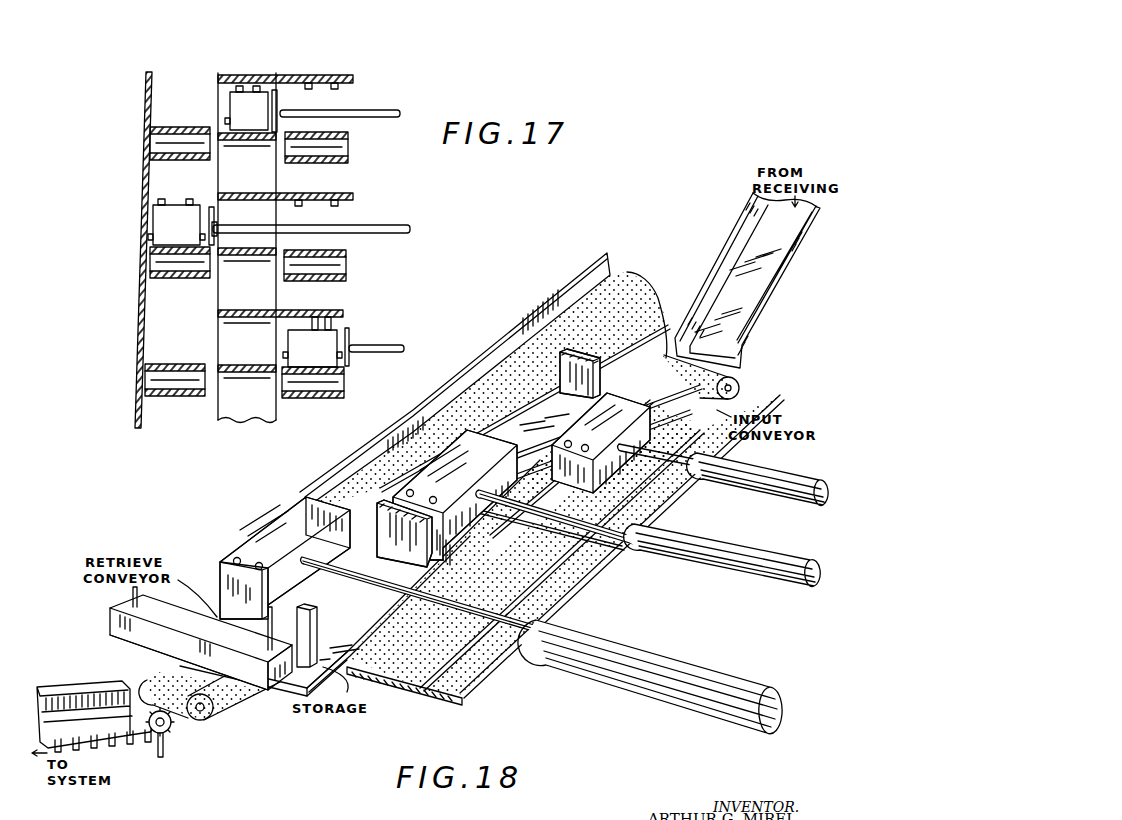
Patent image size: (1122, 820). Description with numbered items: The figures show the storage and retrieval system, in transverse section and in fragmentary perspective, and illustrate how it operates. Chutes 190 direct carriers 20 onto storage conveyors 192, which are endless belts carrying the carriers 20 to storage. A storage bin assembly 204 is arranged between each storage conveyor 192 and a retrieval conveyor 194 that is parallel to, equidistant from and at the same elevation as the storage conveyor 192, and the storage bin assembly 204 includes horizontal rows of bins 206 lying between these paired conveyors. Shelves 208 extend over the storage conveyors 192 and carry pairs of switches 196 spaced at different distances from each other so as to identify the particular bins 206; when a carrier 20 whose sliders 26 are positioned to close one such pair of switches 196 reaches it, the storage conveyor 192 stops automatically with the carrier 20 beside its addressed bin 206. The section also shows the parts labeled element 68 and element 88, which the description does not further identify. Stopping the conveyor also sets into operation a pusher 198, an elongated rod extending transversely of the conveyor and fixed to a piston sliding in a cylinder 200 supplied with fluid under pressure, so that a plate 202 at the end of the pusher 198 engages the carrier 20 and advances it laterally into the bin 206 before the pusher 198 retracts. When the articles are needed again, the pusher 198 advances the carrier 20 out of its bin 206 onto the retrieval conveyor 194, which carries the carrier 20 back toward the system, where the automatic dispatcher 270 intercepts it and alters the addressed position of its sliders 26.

In FIG. 18, the carrier 20 is at (440, 473).
In FIG. 18, the slider 26 is at (262, 563).
In FIG. 17, the device 68 is at (181, 222).
In FIG. 17, the device 88 is at (160, 204).
In FIG. 18, the chute 190 is at (760, 334).
In FIG. 17, the storage conveyor 192 is at (350, 255).
In FIG. 18, the storage conveyor 192 is at (552, 598).
In FIG. 17, the retrieval conveyor 194 is at (164, 278).
In FIG. 18, the retrieval conveyor 194 is at (233, 693).
In FIG. 17, the switch 196 is at (328, 86).
In FIG. 17, the pusher 198 is at (412, 232).
In FIG. 18, the pusher 198 is at (618, 537).
In FIG. 18, the cylinder 200 is at (748, 557).
In FIG. 18, the plate 202 is at (456, 497).
In FIG. 17, the storage bin assembly 204 is at (271, 432).
In FIG. 18, the bin 206 is at (377, 619).
In FIG. 17, the shelf 208 is at (336, 194).
In FIG. 18, the automatic dispatcher 270 is at (102, 625).